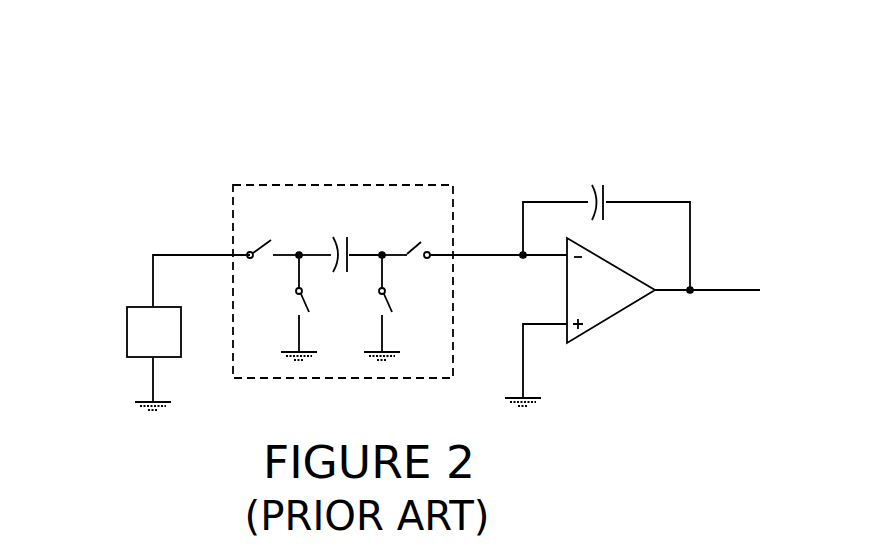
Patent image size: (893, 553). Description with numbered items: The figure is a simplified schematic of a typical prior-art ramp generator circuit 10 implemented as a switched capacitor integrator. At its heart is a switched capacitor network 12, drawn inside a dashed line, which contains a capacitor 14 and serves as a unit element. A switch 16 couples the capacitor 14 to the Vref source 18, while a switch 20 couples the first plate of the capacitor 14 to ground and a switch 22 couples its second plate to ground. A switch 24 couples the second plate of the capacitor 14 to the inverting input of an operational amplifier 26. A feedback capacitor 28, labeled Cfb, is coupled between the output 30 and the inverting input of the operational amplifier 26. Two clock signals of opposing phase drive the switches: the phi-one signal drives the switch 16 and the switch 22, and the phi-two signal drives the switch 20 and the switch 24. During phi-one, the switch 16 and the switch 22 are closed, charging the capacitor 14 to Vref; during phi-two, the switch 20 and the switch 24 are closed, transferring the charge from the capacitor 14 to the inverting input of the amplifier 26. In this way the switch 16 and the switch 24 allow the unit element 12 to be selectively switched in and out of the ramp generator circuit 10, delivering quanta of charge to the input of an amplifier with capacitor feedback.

The ramp generator circuit 10 is at (541, 76).
The switched capacitor network 12 is at (453, 183).
The capacitor 14 is at (345, 231).
The switch 16 is at (272, 233).
The Vref source 18 is at (119, 330).
The switch 20 is at (310, 300).
The switch 22 is at (396, 302).
The switch 24 is at (414, 236).
The operational amplifier 26 is at (615, 318).
The feedback capacitor 28 is at (612, 210).
The output 30 is at (740, 281).